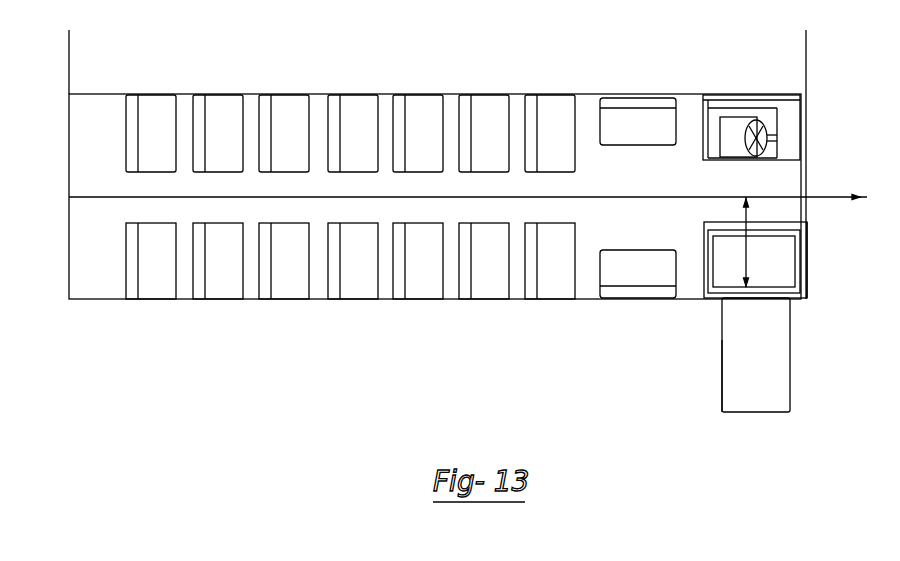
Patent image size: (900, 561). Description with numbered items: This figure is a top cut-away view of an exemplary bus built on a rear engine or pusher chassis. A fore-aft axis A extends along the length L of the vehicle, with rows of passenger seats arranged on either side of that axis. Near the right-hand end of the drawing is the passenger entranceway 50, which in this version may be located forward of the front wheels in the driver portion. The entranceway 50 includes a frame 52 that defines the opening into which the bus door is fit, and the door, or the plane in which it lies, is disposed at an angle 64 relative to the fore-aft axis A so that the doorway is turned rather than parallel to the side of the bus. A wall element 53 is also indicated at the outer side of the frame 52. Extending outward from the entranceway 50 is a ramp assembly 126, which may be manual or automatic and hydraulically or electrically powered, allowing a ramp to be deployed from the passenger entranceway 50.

The passenger entranceway 50 is at (778, 300).
The frame 52 is at (705, 300).
The outer wall of hub 53 is at (807, 282).
The angle 64 is at (748, 248).
The ramp assembly 126 is at (722, 378).
The fore-aft axis A is at (822, 197).
The length L is at (806, 43).